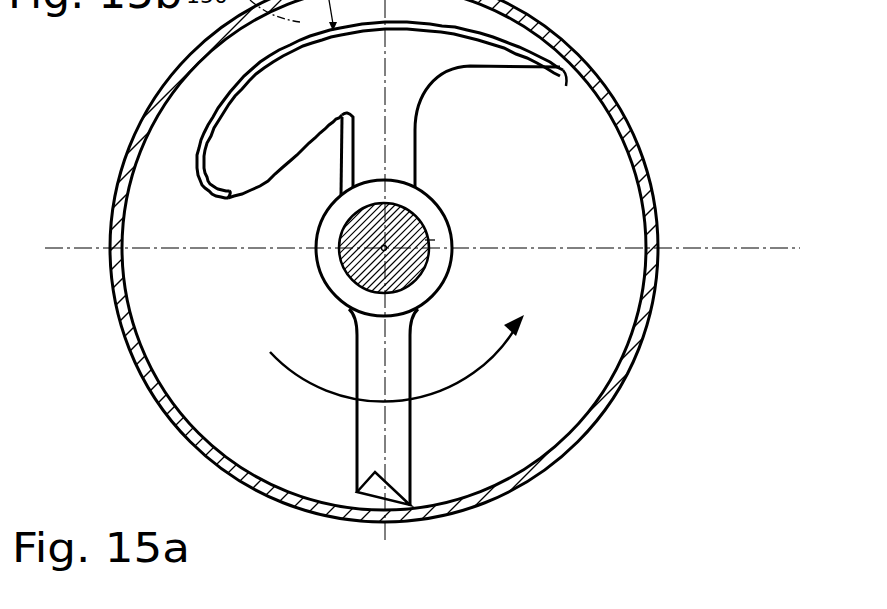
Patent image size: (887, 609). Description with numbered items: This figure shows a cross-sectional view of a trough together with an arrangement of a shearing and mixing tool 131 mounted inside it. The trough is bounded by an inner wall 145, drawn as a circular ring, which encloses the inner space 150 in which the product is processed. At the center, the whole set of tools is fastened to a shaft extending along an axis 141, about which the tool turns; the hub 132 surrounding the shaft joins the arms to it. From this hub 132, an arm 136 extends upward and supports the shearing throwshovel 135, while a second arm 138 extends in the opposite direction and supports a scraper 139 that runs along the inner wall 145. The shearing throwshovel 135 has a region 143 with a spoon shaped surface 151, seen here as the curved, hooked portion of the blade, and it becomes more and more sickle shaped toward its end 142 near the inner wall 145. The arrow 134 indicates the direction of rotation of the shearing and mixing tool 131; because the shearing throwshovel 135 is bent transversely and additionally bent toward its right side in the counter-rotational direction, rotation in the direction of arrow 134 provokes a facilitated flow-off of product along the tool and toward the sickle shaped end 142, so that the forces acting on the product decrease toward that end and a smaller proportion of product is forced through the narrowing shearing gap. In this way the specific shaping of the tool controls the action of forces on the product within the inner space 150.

The shearing and mixing tool 131 is at (393, 166).
The hub 132 is at (413, 279).
The counter-rotational direction arrow 134 is at (480, 373).
The shearing throwshovel 135 is at (355, 110).
The arm 136 is at (402, 118).
The second arm 138 is at (376, 439).
The scraper 139 is at (372, 487).
The axis 141 is at (430, 242).
The sickle shaped end 142 is at (567, 80).
The region with spoon shaped surface 143 is at (214, 200).
The inner wall 145 is at (141, 354).
The inner space 150 is at (236, 375).
The spoon shaped surface 151 is at (277, 137).